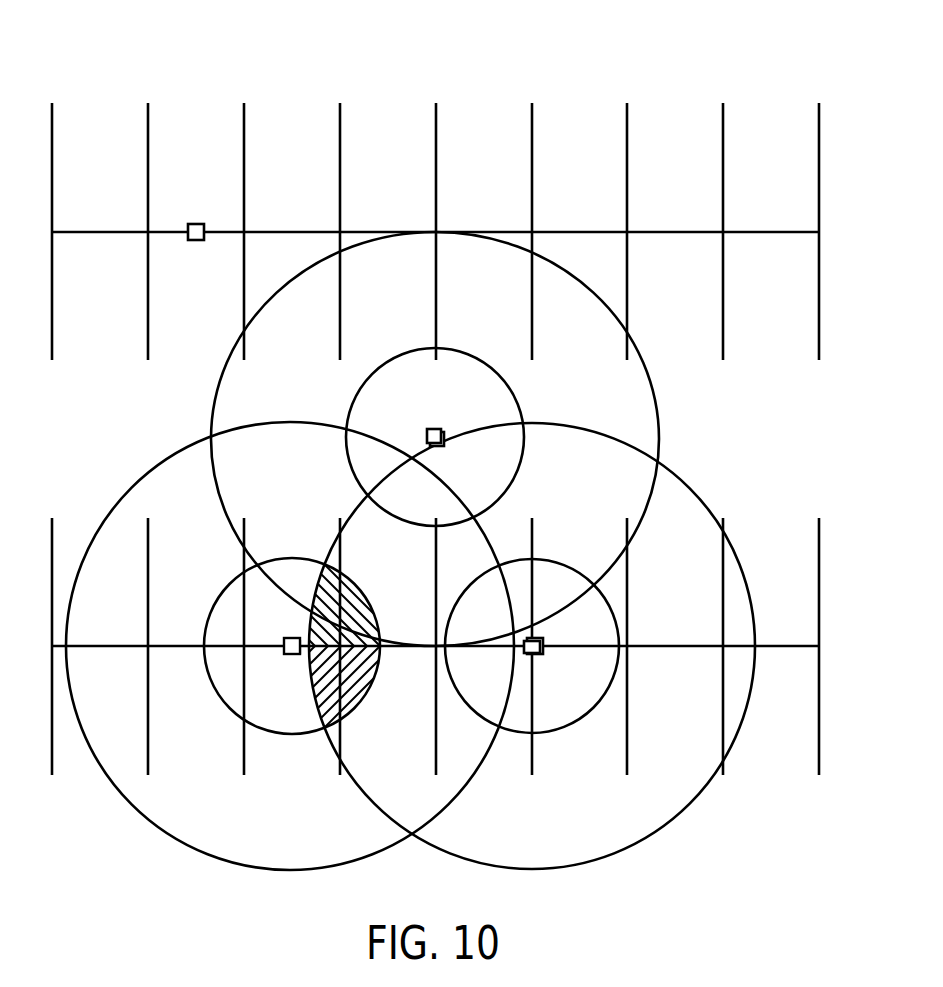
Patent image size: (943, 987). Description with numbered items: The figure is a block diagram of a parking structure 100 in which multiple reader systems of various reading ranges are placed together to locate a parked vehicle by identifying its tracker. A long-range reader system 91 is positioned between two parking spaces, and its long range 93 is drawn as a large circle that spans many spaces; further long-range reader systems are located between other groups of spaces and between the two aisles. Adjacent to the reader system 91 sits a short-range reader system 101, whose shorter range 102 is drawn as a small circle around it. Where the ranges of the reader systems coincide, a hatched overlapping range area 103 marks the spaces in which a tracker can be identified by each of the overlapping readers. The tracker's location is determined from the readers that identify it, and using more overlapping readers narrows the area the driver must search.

The parking structure 100 is at (166, 88).
The long range 93 is at (135, 811).
The reader system 91 is at (291, 656).
The short-range reader system 101 is at (284, 638).
The shorter range 102 is at (225, 703).
The overlapping range area 103 is at (357, 705).